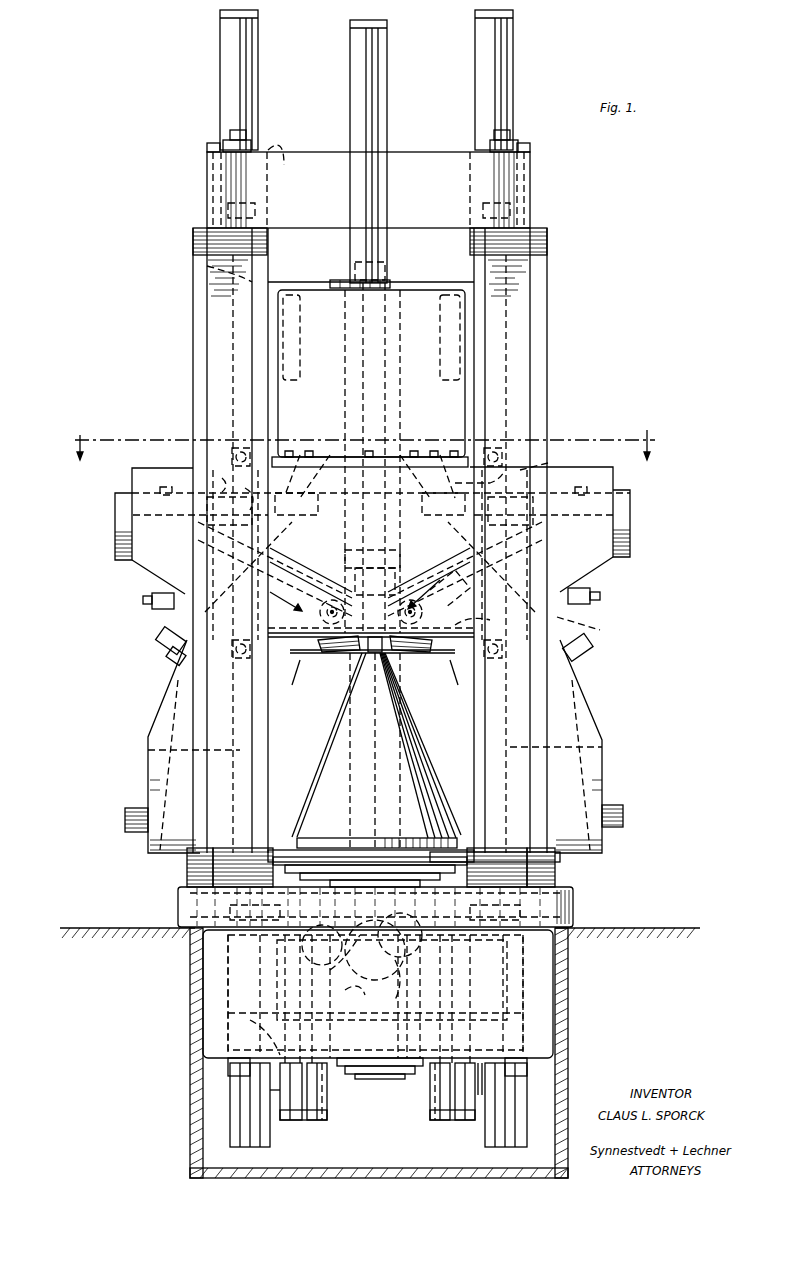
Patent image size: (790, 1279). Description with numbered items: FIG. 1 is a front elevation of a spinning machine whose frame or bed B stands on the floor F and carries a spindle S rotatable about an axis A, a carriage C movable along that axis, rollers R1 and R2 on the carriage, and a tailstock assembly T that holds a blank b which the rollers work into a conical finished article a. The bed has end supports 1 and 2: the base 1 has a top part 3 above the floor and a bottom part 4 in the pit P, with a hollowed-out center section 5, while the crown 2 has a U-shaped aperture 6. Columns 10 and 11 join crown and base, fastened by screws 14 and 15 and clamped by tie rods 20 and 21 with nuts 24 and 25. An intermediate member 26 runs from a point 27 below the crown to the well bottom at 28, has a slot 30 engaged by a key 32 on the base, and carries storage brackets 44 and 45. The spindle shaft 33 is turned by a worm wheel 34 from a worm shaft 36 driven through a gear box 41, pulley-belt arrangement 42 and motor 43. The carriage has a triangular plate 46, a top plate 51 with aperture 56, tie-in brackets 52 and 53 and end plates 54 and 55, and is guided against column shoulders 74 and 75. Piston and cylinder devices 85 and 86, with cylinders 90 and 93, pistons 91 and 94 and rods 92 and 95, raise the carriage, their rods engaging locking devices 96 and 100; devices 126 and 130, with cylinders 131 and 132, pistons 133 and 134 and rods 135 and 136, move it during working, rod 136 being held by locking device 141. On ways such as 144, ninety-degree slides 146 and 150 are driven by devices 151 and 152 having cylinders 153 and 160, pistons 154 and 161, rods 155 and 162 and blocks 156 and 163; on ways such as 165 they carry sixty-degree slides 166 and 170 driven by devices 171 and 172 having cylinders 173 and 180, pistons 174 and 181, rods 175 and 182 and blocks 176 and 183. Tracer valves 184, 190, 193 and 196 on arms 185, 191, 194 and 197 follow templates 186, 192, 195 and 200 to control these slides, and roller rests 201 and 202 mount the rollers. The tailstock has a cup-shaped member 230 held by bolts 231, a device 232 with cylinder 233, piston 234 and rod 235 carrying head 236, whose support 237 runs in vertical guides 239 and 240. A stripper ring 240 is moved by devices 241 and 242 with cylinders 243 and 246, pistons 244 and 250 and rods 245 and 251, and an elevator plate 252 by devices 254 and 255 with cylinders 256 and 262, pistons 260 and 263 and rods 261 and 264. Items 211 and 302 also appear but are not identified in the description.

The end support 1 is at (536, 983).
The crown 2 is at (532, 185).
The top part 3 is at (595, 884).
The bottom part 4 is at (553, 1021).
The hollowed-out center section 5 is at (250, 982).
The U-shaped aperture 6 is at (276, 142).
The column 10 is at (327, 829).
The column 11 is at (511, 829).
The screws 14 is at (212, 143).
The screws 15 is at (200, 900).
The tie rod 20 is at (246, 132).
The tie rod 21 is at (494, 133).
The nuts 24 is at (230, 140).
The nuts 25 is at (228, 1068).
The intermediate structural member 26 is at (340, 280).
The point just below crown 27 is at (207, 266).
The well bottom abutment 28 is at (260, 1052).
The slot 30 is at (352, 395).
The key 32 is at (395, 1030).
The shaft 33 is at (405, 980).
The worm wheel 34 is at (356, 930).
The shaft 36 is at (382, 950).
The gear box 41 is at (400, 918).
The pulley-belt arrangement 42 is at (360, 972).
The electric motor 43 is at (362, 994).
The bracket 44 is at (300, 330).
The bracket 45 is at (440, 328).
The triangular plate 46 is at (585, 575).
The top plate 51 is at (600, 497).
The tie-in bracket 52 is at (290, 656).
The tie-in bracket 53 is at (458, 682).
The end plate 54 is at (115, 528).
The end plate 55 is at (630, 537).
The aperture 56 is at (483, 480).
The shoulder 74 is at (193, 414).
The shoulder 75 is at (547, 414).
The piston and cylinder device 85 is at (233, 297).
The piston and cylinder device 86 is at (508, 297).
The cylinder 90 is at (221, 45).
The piston 91 is at (228, 210).
The rod 92 is at (233, 350).
The cylinder 93 is at (513, 72).
The piston 94 is at (510, 210).
The rod 95 is at (520, 322).
The locking device 96 is at (232, 455).
The locking device 100 is at (502, 455).
The piston and cylinder device 126 is at (235, 712).
The piston and cylinder device 130 is at (508, 722).
The cylinder 131 is at (228, 960).
The cylinder 132 is at (540, 997).
The piston 133 is at (230, 912).
The piston 134 is at (573, 910).
The piston rod 135 is at (176, 750).
The piston rod 136 is at (573, 747).
The locking device 141 is at (500, 656).
The way 144 is at (238, 658).
The ninety-degree slide 146 is at (275, 555).
The ninety-degree slide 150 is at (420, 536).
The piston and cylinder device 151 is at (324, 464).
The piston and cylinder device 152 is at (414, 465).
The cylinder 153 is at (302, 464).
The piston 154 is at (240, 491).
The piston rod 155 is at (223, 477).
The block 156 is at (160, 492).
The cylinder 160 is at (441, 468).
The piston 161 is at (451, 543).
The piston rod 162 is at (548, 463).
The block 163 is at (590, 497).
The way 165 is at (342, 592).
The sixty-degree slide 166 is at (371, 616).
The sixty-degree slide 170 is at (500, 625).
The piston and cylinder device 171 is at (311, 577).
The piston and cylinder device 172 is at (429, 574).
The cylinder 173 is at (325, 590).
The piston 174 is at (318, 560).
The piston rod 175 is at (150, 596).
The block 176 is at (150, 572).
The cylinder 180 is at (450, 589).
The piston 181 is at (477, 605).
The piston rod 182 is at (570, 590).
The block 183 is at (555, 548).
The tracer valve 184 is at (151, 600).
The arm 185 is at (152, 600).
The template 186 is at (172, 614).
The tracer valve 190 is at (172, 651).
The arm 191 is at (160, 635).
The template 192 is at (170, 686).
The tracer valve 193 is at (600, 597).
The arm 194 is at (592, 594).
The template 195 is at (623, 812).
The tracer valve 196 is at (583, 650).
The arm 197 is at (593, 627).
The template 200 is at (580, 692).
The roller rest 201 is at (371, 642).
The roller rest 202 is at (423, 644).
The guide 211 is at (346, 586).
The cup-shaped member 230 is at (465, 403).
The bolts 231 is at (372, 455).
The piston and cylinder device 232 is at (388, 60).
The cylinder 233 is at (380, 103).
The piston 234 is at (390, 252).
The piston rod 235 is at (388, 353).
The head member 236 is at (375, 581).
The support 237 is at (372, 558).
The vertical guide 239 is at (298, 497).
The stripper ring 240 is at (430, 498).
The piston and cylinder device 241 is at (312, 1124).
The piston and cylinder device 242 is at (463, 1124).
The cylinder 243 is at (240, 1095).
The piston 244 is at (291, 1120).
The piston rod 245 is at (280, 1090).
The cylinder 246 is at (482, 1095).
The piston 250 is at (470, 1120).
The piston rod 251 is at (480, 1090).
The elevator plate 252 is at (290, 838).
The piston and cylinder device 254 is at (322, 1124).
The piston and cylinder device 255 is at (438, 1124).
The cylinder 256 is at (327, 1090).
The piston 260 is at (328, 1110).
The rod 261 is at (320, 1033).
The cylinder 262 is at (430, 1086).
The piston 263 is at (430, 1112).
The rod 264 is at (377, 999).
The bracket 302 is at (175, 660).
The spindle axis A is at (375, 740).
The frame or bed B is at (532, 361).
The carriage C is at (307, 533).
The floor F is at (650, 928).
The pit P is at (210, 1088).
The roller R1 is at (372, 663).
The roller R2 is at (440, 669).
The spindle S is at (346, 751).
The tailstock assembly T is at (371, 530).
The finished article a is at (420, 746).
The blank b is at (289, 687).